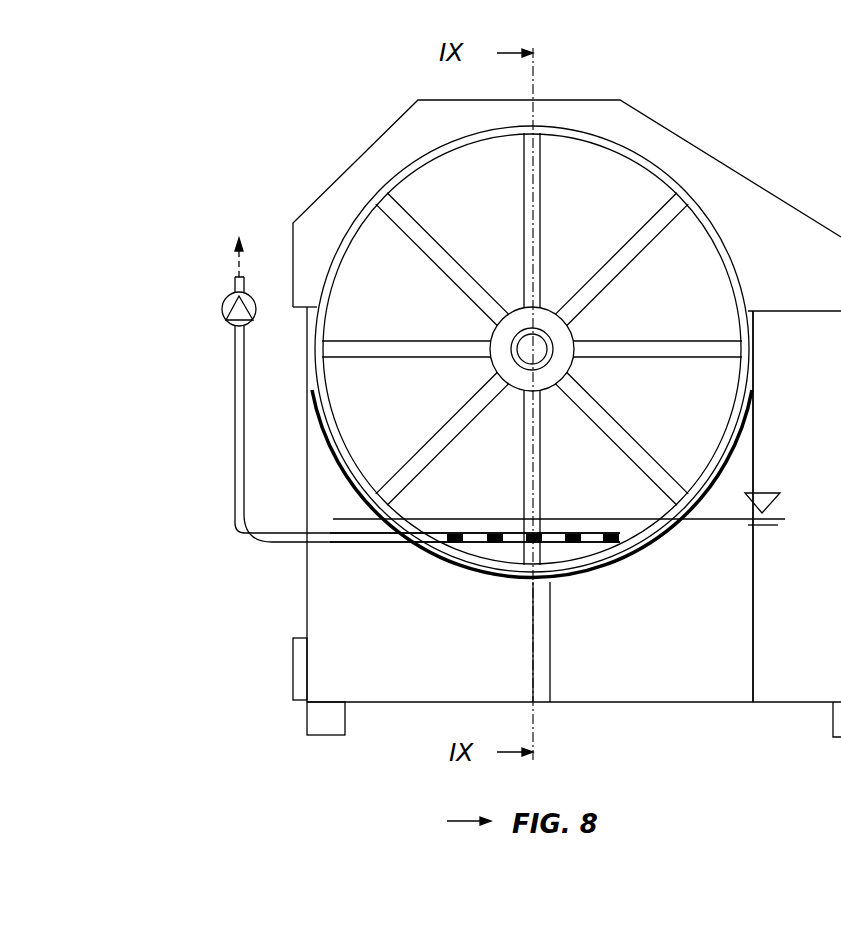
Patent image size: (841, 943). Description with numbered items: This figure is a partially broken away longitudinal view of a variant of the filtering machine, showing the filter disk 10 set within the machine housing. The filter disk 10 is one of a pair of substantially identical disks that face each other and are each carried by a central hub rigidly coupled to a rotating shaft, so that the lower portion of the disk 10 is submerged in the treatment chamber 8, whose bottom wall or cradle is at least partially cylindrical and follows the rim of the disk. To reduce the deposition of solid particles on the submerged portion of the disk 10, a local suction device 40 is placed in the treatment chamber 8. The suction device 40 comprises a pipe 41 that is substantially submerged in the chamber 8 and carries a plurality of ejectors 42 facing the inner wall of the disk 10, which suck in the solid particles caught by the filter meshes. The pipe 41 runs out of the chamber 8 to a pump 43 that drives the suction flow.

The treatment chamber 8 is at (640, 528).
The filter disk 10 is at (608, 197).
The local suction device 40 is at (229, 489).
The pipe 41 is at (371, 545).
The ejectors 42 is at (611, 545).
The pump 43 is at (222, 306).